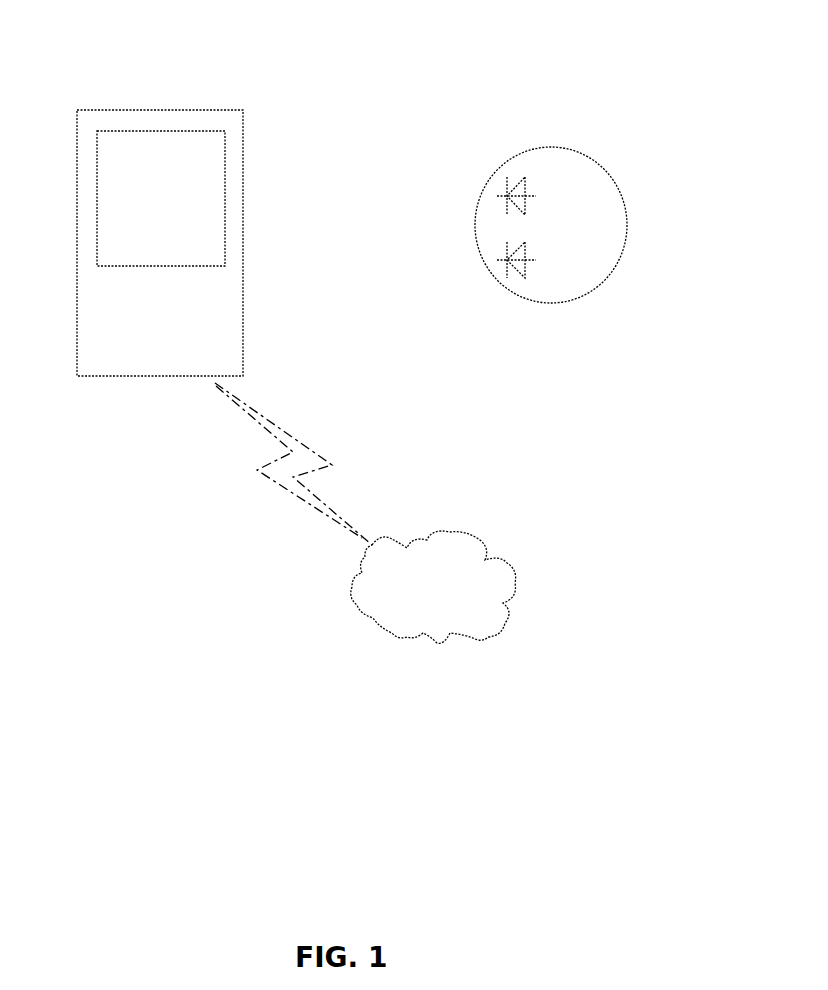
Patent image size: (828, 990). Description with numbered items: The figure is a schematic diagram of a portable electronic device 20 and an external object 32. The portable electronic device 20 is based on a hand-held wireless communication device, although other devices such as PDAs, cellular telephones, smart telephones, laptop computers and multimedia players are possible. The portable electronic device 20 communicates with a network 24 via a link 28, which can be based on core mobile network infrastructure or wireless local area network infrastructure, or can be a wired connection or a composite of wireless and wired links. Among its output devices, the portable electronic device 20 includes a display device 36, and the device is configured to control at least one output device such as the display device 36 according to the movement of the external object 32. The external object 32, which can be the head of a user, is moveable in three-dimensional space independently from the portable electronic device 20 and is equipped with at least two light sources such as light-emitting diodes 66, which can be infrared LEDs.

The portable electronic device 20 is at (146, 89).
The display device 36 is at (225, 198).
The link 28 is at (260, 468).
The network 24 is at (352, 585).
The external object 32 is at (627, 226).
The light-emitting diodes 66 is at (527, 297).